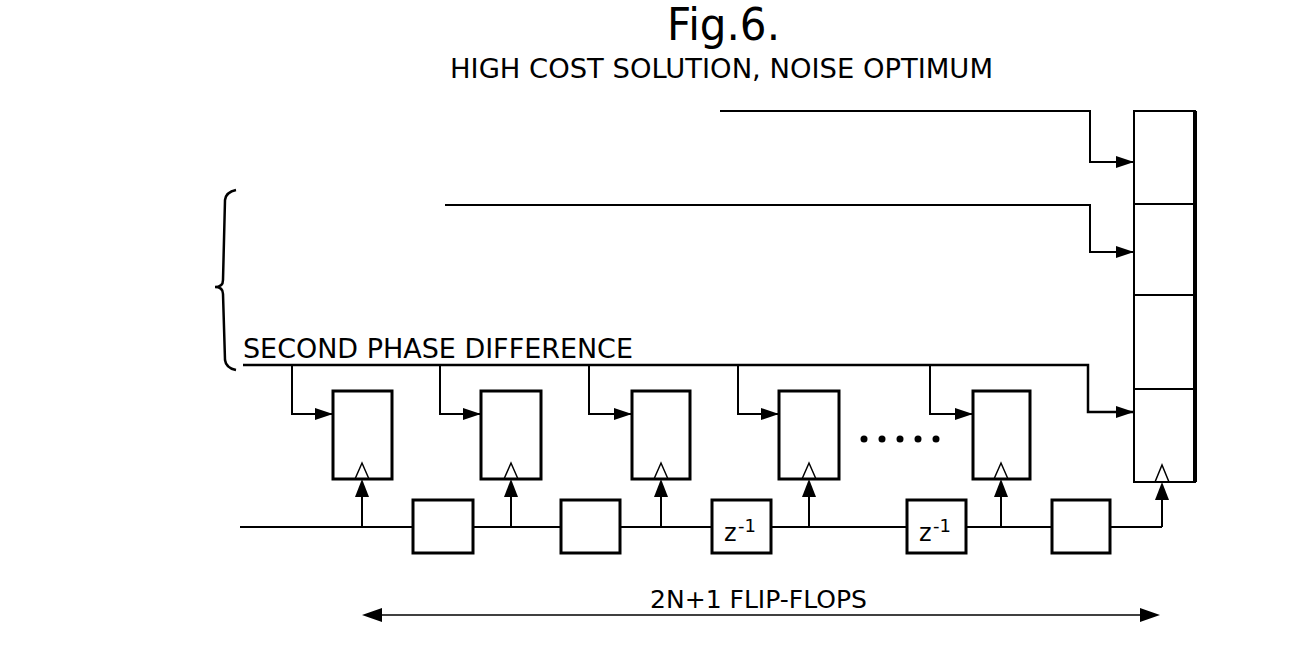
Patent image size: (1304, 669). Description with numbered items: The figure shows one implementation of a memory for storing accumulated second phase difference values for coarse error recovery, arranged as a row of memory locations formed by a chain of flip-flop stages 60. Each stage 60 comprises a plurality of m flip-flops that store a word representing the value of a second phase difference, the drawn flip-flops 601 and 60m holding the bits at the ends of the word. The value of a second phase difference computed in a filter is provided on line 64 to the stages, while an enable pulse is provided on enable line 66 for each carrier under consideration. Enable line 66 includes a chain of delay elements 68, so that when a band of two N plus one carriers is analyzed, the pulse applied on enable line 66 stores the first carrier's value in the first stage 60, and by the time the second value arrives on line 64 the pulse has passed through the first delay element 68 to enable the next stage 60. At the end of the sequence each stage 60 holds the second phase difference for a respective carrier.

The flip-flop stage 60 is at (333, 465).
The flip-flop of the stage storing bit bm 60m is at (1197, 167).
The flip-flop of the stage storing bit b0 601 is at (1238, 427).
The line 64 is at (660, 264).
The enable line 66 is at (283, 527).
The delay element 68 is at (1094, 555).